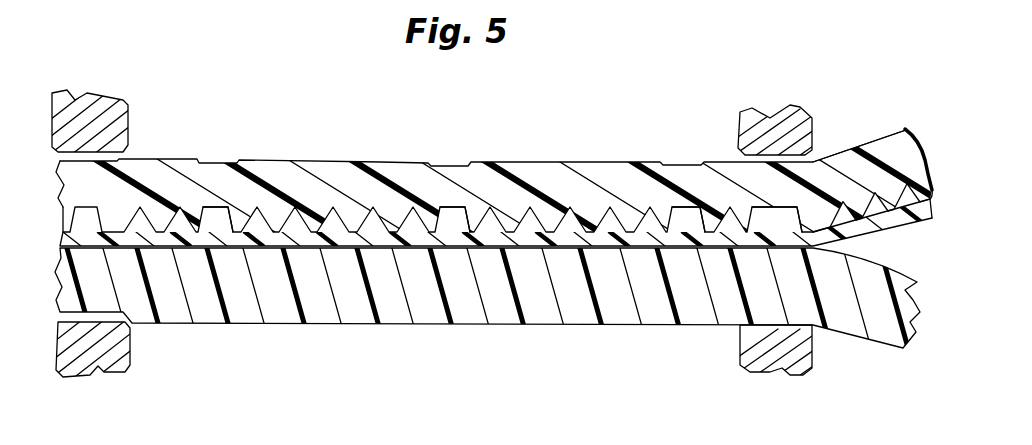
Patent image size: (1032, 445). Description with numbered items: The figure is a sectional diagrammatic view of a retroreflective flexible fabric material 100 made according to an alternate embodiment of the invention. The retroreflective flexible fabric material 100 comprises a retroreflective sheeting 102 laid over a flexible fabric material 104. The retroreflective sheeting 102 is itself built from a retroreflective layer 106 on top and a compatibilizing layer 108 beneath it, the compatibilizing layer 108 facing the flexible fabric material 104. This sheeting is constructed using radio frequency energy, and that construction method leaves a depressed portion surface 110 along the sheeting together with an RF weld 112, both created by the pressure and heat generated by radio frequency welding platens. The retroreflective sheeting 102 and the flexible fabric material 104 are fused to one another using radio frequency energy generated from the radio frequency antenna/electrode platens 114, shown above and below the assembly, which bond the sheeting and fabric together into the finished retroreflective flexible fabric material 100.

The retroreflective flexible fabric material 100 is at (529, 235).
The retroreflective sheeting 102 is at (529, 168).
The flexible fabric material 104 is at (877, 337).
The retroreflective layer 106 is at (882, 143).
The compatibilizing layer 108 is at (866, 242).
The depressed portion surface 110 is at (440, 161).
The RF weld 112 is at (612, 163).
The radio frequency antenna/electrode platens 114 is at (737, 140).